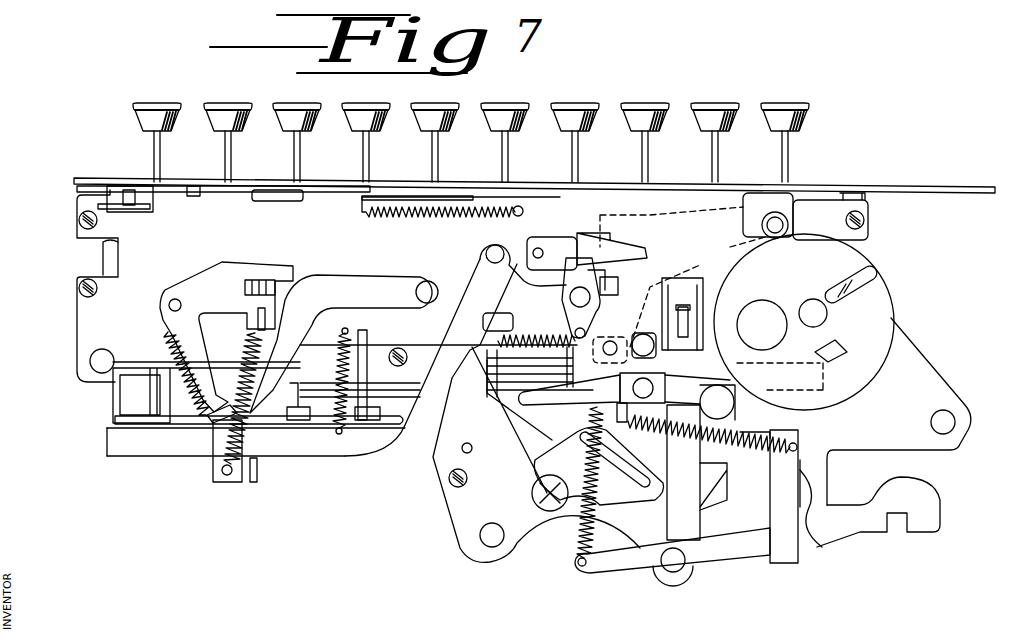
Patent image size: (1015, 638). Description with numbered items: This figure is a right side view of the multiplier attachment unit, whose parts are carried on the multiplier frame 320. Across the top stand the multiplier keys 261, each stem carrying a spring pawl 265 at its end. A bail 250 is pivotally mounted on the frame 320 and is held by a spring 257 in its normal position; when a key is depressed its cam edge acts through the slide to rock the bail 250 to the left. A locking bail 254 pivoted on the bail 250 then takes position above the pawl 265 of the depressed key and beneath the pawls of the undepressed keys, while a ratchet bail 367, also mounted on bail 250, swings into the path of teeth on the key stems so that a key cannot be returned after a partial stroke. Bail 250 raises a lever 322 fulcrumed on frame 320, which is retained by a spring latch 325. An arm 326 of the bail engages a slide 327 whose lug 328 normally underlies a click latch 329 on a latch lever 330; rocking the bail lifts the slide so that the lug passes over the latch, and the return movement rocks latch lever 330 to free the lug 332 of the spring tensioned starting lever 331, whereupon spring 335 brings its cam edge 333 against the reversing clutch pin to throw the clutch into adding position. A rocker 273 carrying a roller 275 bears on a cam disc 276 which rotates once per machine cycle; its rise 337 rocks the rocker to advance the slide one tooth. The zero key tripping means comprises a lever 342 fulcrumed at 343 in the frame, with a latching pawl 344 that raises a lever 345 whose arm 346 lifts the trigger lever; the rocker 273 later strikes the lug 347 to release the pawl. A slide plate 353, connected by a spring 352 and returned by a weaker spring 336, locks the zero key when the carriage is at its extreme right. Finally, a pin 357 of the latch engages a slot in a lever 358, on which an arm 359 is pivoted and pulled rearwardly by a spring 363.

The bail 250 is at (127, 387).
The locking bail 254 is at (123, 418).
The spring 257 is at (257, 368).
The multiplier keys 261 is at (641, 163).
The spring pawl 265 is at (352, 427).
The rocker 273 is at (752, 222).
The roller 275 is at (782, 218).
The cam disc 276 is at (890, 292).
The multiplier frame 320 is at (88, 322).
The lever 322 is at (200, 283).
The spring latch 325 is at (222, 422).
The arm 326 is at (700, 310).
The slide 327 is at (679, 285).
The lug 328 is at (728, 465).
The click latch 329 is at (770, 438).
The latch lever 330 is at (823, 472).
The starting lever 331 is at (742, 550).
The lug 332 is at (833, 550).
The cam edge 333 is at (888, 523).
The spring 335 is at (582, 535).
The spring 336 is at (457, 218).
The rise 337 is at (818, 355).
The lever 342 is at (288, 447).
The fulcrum 343 is at (485, 248).
The latching pawl 344 is at (567, 305).
The lever 345 is at (573, 228).
The arm 346 is at (647, 253).
The lug 347 is at (613, 278).
The spring 352 is at (408, 218).
The slide plate 353 is at (345, 189).
The pin 357 is at (600, 447).
The lever 358 is at (630, 495).
The arm 359 is at (542, 400).
The spring 363 is at (680, 430).
The ratchet bail 367 is at (166, 345).